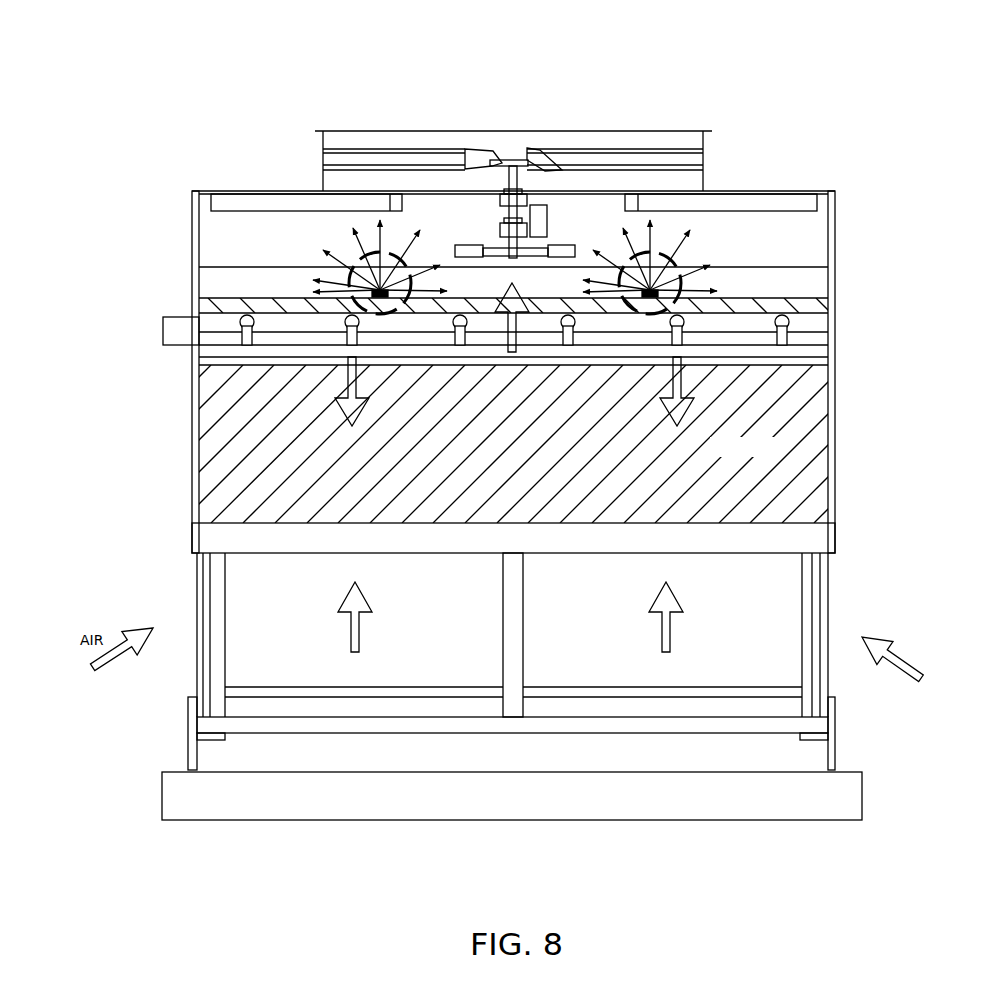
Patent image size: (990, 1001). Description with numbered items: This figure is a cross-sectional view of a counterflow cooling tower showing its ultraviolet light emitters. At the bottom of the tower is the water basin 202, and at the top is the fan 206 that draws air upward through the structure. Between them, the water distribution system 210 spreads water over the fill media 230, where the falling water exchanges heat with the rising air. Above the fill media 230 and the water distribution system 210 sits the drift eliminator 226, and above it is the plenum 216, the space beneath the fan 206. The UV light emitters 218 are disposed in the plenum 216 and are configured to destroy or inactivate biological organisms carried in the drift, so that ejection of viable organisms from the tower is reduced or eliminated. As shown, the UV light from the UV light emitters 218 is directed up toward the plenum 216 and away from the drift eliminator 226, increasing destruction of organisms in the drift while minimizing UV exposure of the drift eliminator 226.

The water basin 202 is at (535, 865).
The fan 206 is at (360, 76).
The water distribution system 210 is at (539, 53).
The plenum 216 is at (817, 223).
The UV light emitters 218 is at (253, 53).
The drift eliminator 226 is at (208, 130).
The fill media 230 is at (133, 483).